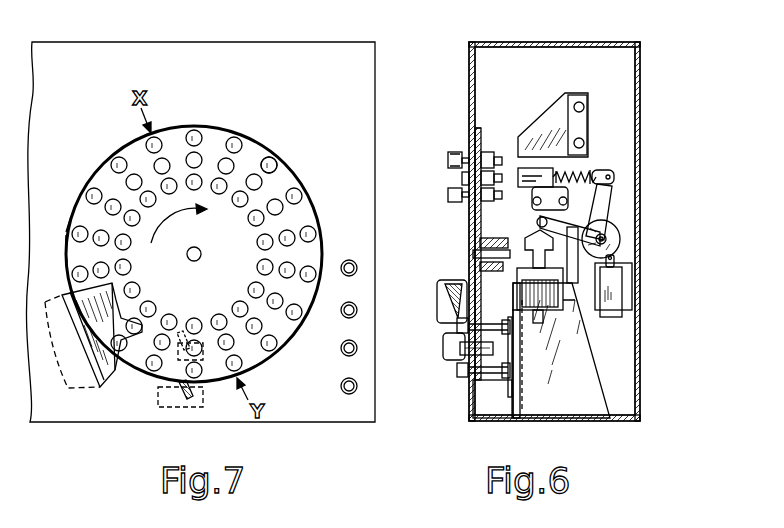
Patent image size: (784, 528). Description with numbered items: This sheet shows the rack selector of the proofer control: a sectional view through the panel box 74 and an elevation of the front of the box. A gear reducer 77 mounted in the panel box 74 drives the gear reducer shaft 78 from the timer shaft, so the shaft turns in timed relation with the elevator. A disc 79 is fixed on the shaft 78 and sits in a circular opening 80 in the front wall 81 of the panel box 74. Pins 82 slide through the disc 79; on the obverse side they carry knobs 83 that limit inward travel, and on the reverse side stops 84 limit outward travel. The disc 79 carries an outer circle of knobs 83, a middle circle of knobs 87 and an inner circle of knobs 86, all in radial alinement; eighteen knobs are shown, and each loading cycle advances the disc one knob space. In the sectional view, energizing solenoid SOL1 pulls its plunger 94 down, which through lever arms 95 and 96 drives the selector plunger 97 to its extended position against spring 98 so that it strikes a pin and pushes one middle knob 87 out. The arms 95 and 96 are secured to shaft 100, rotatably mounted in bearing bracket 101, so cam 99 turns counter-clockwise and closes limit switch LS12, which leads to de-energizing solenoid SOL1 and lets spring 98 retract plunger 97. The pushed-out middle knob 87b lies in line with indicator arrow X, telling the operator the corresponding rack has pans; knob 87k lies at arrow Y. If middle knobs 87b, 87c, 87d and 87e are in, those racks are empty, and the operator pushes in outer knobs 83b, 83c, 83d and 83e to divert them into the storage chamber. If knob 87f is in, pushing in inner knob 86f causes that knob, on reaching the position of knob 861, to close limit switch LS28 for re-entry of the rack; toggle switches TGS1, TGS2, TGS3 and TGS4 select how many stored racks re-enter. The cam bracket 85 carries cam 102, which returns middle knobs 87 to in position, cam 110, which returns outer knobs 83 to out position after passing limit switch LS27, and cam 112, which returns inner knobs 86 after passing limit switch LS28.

In FIG. 6, the panel box 74 is at (523, 42).
In FIG. 7, the front wall 81 is at (275, 53).
In FIG. 6, the front wall 81 is at (468, 76).
In FIG. 7, the disc 79 is at (70, 226).
In FIG. 6, the disc 79 is at (480, 128).
In FIG. 7, the circular opening 80 is at (74, 242).
In FIG. 7, the gear reducer shaft 78 is at (193, 248).
In FIG. 6, the gear reducer shaft 78 is at (473, 253).
In FIG. 6, the pins 82 is at (456, 152).
In FIG. 6, the knobs 83 is at (447, 160).
In FIG. 6, the knobs 87 is at (462, 178).
In FIG. 6, the knobs 86 is at (447, 196).
In FIG. 6, the stops 84 is at (490, 153).
In FIG. 6, the gear reducer 77 is at (520, 234).
In FIG. 6, the cam bracket 85 is at (522, 392).
In FIG. 6, the plunger 94 is at (562, 382).
In FIG. 6, the spring 98 is at (585, 168).
In FIG. 6, the selector plunger 97 is at (600, 184).
In FIG. 6, the lever arm 96 is at (602, 214).
In FIG. 6, the lever arm 95 is at (618, 228).
In FIG. 6, the cam 99 is at (606, 240).
In FIG. 6, the shaft 100 is at (622, 246).
In FIG. 6, the bearing bracket 101 is at (623, 253).
In FIG. 6, the limit switch LS12 is at (618, 297).
In FIG. 6, the solenoid SOL1 is at (560, 310).
In FIG. 7, the cam 102 is at (98, 377).
In FIG. 6, the cam 102 is at (443, 298).
In FIG. 6, the cam 110 is at (500, 312).
In FIG. 6, the cam 112 is at (500, 270).
In FIG. 7, the outer knob 83b is at (164, 158).
In FIG. 7, the middle knob 87b is at (160, 140).
In FIG. 7, the outer knob 83c is at (200, 154).
In FIG. 7, the middle knob 87c is at (240, 140).
In FIG. 7, the outer knob 83d is at (233, 163).
In FIG. 7, the middle knob 87d is at (276, 163).
In FIG. 7, the outer knob 83e is at (262, 181).
In FIG. 7, the middle knob 87e is at (302, 196).
In FIG. 7, the middle knob 87f is at (283, 208).
In FIG. 7, the inner knob 86f is at (254, 227).
In FIG. 7, the inner knob 861 is at (194, 318).
In FIG. 7, the middle knob 87k is at (233, 347).
In FIG. 7, the limit switch LS28 is at (176, 357).
In FIG. 7, the limit switch LS27 is at (203, 406).
In FIG. 7, the toggle switch TGS1 is at (358, 386).
In FIG. 7, the toggle switch TGS2 is at (358, 349).
In FIG. 7, the toggle switch TGS3 is at (358, 310).
In FIG. 7, the toggle switch TGS4 is at (358, 268).